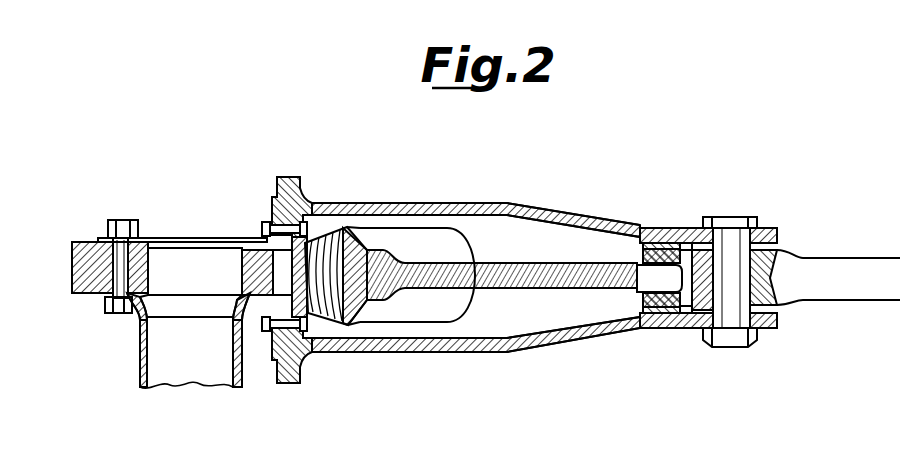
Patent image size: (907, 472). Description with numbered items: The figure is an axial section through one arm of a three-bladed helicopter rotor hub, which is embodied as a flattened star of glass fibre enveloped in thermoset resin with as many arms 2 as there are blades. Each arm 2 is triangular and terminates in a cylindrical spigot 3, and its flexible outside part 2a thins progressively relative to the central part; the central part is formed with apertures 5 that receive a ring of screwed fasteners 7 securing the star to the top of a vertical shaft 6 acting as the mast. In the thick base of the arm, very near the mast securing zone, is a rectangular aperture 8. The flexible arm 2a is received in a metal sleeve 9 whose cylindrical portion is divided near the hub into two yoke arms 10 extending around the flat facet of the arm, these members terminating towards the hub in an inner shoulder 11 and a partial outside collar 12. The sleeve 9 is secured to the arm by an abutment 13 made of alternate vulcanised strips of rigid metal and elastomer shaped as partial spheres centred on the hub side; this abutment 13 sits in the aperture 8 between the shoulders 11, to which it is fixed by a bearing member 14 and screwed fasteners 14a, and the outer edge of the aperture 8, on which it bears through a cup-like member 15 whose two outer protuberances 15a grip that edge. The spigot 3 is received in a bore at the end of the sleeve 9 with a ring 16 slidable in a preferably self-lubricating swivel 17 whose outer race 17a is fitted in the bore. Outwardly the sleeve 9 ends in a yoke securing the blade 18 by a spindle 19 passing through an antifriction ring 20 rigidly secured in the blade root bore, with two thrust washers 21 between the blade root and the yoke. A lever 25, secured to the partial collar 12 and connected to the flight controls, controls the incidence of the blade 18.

The arm 2 is at (432, 295).
The flexible outside part of arm 2a is at (553, 284).
The cylindrical spigot 3 is at (655, 279).
The apertures 5 is at (94, 272).
The vertical shaft 6 is at (141, 347).
The screwed fasteners 7 is at (132, 224).
The rectangular aperture 8 is at (280, 287).
The metal sleeve 9 is at (569, 212).
The yoke arms 10 is at (400, 205).
The inner shoulder 11 is at (276, 340).
The partial outside collar 12 is at (302, 190).
The abutment 13 is at (318, 247).
The bearing member 14 is at (333, 317).
The screwed fasteners 14a is at (272, 227).
The cup-like member 15 is at (366, 318).
The outer protuberances 15a is at (405, 234).
The ring 16 is at (638, 308).
The swivel 17 is at (660, 326).
The outer race 17a is at (661, 243).
The blade 18 is at (850, 262).
The spindle 19 is at (783, 289).
The antifriction ring 20 is at (781, 253).
The thrust washers 21 is at (762, 325).
The lever 25 is at (283, 385).